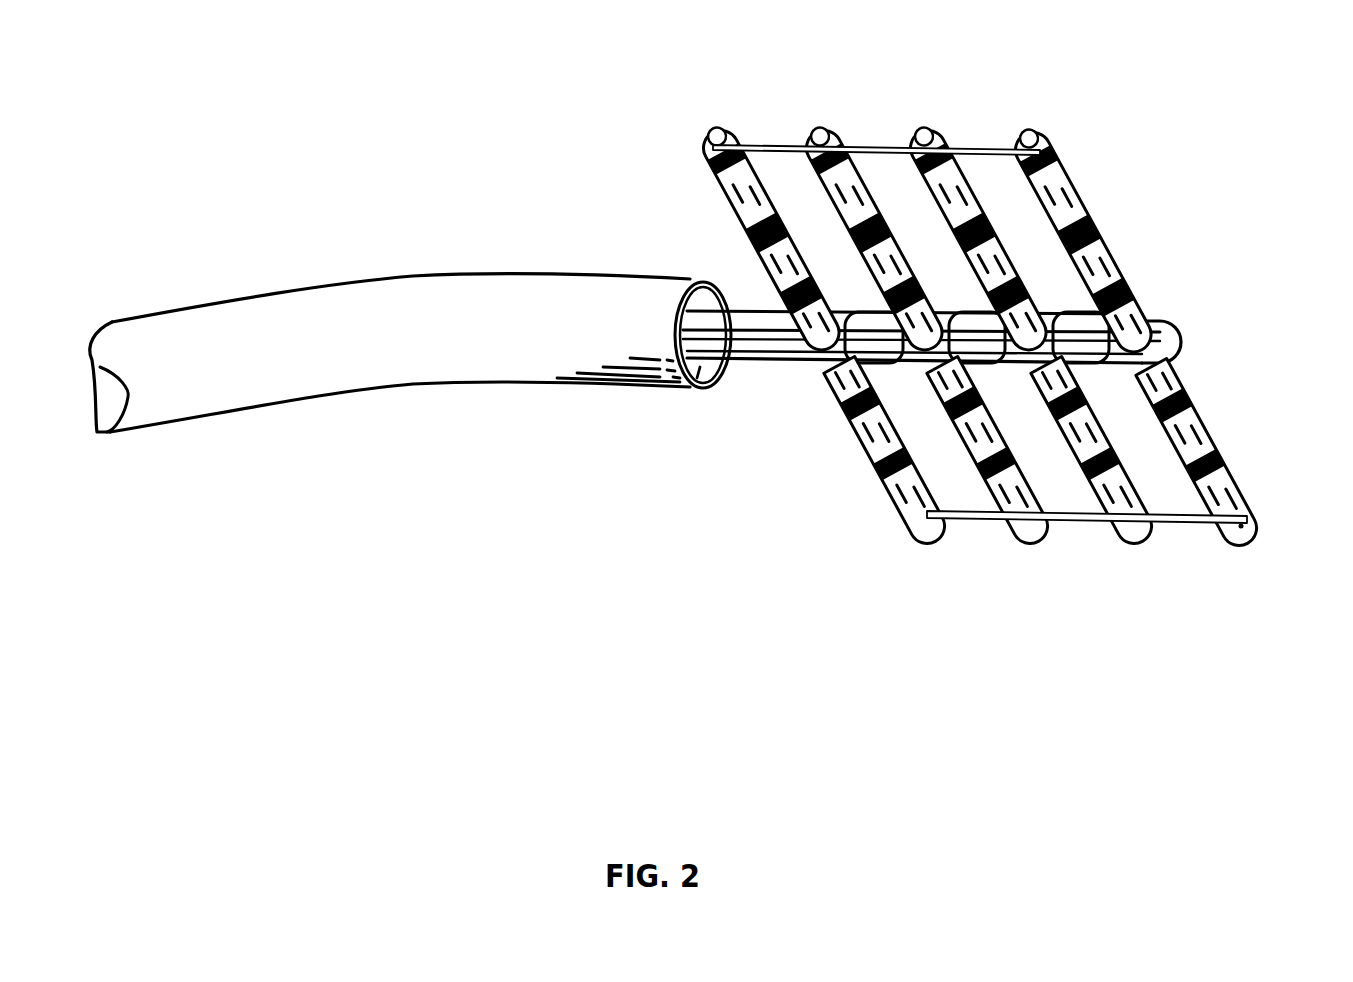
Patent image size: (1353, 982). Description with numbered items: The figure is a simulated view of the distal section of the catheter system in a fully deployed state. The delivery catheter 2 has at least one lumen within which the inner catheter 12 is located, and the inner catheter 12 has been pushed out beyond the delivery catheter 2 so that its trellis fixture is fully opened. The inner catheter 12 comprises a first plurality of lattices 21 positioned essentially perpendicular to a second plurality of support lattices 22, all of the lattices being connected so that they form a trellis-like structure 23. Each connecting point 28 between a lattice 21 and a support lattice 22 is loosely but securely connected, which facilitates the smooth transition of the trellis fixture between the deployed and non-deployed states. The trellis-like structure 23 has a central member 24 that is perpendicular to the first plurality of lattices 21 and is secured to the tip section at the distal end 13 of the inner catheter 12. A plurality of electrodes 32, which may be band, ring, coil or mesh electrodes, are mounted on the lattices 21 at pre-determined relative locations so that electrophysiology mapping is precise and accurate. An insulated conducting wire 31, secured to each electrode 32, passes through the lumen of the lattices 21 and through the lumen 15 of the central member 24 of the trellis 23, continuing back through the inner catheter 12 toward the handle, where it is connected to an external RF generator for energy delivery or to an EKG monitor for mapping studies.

The delivery catheter 2 is at (428, 267).
The inner catheter 12 is at (690, 390).
The distal end of inner catheter 13 is at (1188, 353).
The lumen of inner catheter 15 is at (763, 343).
The lattices 21 is at (763, 173).
The support lattices 22 is at (972, 142).
The trellis-like structure 23 is at (1188, 593).
The central member 24 is at (788, 370).
The connecting point 28 is at (1252, 528).
The insulated conducting wire 31 is at (780, 320).
The electrode 32 is at (1128, 273).